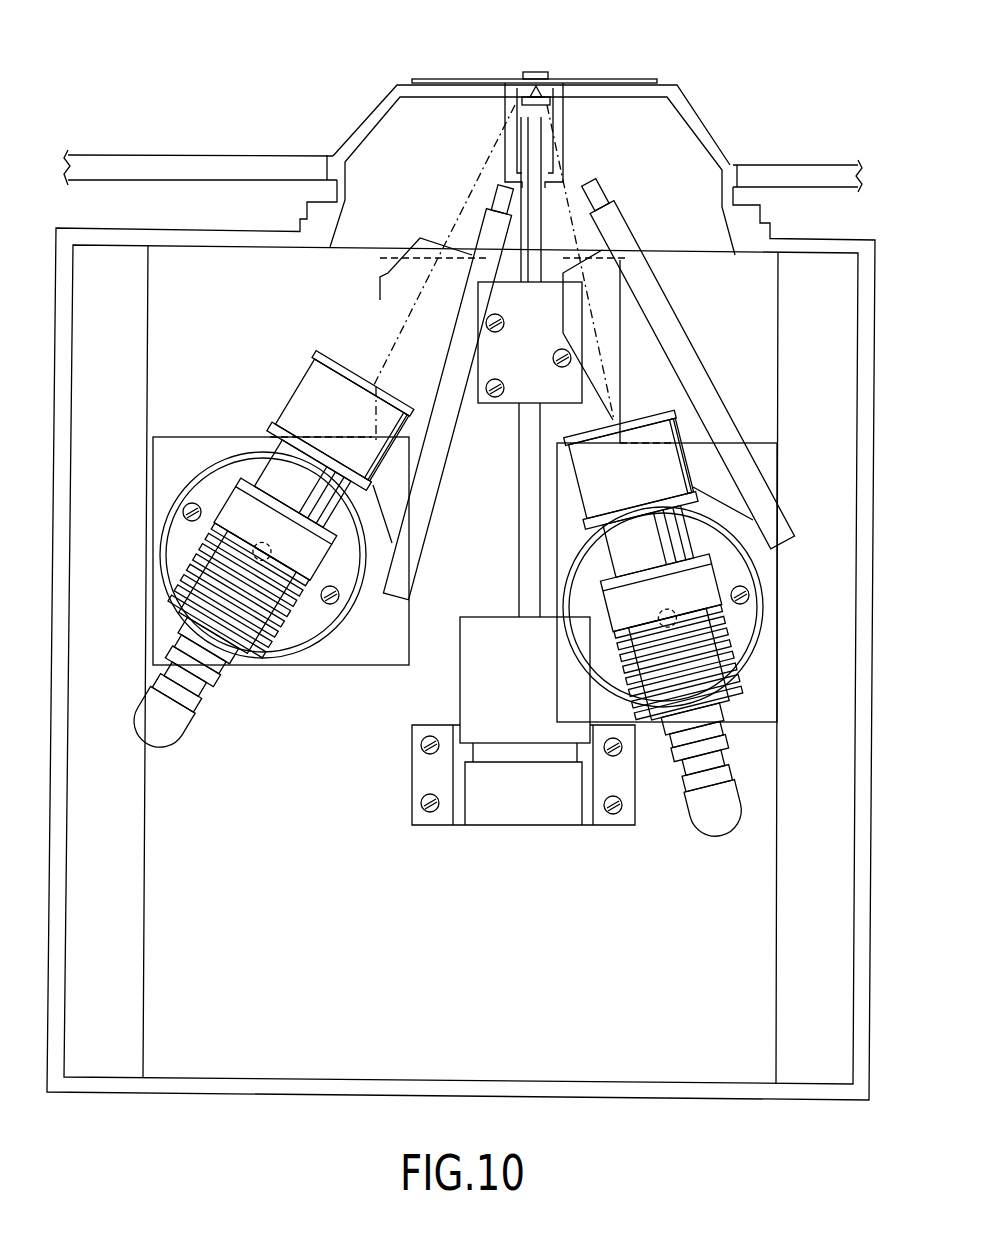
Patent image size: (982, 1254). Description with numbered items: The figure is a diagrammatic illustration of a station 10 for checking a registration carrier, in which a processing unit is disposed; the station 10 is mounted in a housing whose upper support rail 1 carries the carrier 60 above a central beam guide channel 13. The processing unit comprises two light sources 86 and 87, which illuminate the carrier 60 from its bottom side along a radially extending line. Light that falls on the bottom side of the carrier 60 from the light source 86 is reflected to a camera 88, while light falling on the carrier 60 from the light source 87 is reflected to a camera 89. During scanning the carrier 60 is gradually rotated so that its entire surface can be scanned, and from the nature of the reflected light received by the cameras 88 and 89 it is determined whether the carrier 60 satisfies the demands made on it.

The station for checking the registration carrier 10 is at (298, 103).
The housing support rail 1 is at (785, 168).
The carrier 60 is at (610, 80).
The beam guide channel 13 is at (510, 103).
The light source 86 is at (685, 353).
The light source 87 is at (418, 505).
The camera 88 is at (260, 680).
The camera 89 is at (705, 600).